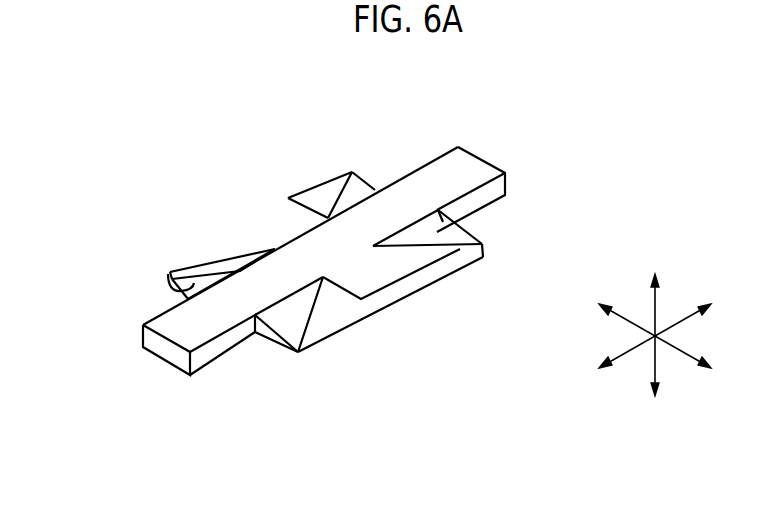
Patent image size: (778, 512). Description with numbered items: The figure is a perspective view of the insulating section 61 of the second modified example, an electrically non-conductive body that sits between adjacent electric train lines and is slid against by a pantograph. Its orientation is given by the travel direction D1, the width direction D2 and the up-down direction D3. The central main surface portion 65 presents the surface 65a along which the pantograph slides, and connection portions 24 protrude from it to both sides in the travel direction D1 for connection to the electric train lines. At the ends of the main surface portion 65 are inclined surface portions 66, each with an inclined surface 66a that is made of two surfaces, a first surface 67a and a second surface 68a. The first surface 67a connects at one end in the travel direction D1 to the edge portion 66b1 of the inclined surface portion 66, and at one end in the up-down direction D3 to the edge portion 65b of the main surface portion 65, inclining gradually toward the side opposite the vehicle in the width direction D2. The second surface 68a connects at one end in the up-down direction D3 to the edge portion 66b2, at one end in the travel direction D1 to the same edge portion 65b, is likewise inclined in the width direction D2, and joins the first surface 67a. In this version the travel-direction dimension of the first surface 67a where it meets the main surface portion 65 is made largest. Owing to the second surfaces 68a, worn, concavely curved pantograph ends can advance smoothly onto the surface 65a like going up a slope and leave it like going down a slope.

The insulating section 61 is at (593, 114).
The connection portions 24 is at (472, 162).
The main surface portion 65 is at (268, 212).
The surface of the main surface portion 65a is at (403, 296).
The edge portion of the main surface portion 65b is at (312, 192).
The inclined surface portion 66 is at (342, 276).
The inclined surface 66a is at (405, 93).
The edge portion on the travel direction side of the inclined surface portion 66b1 is at (372, 178).
The edge portion on one side in the up-down direction of the inclined surface portio 66b2 is at (298, 182).
The first surface 67a is at (358, 180).
The second surface 68a is at (335, 185).
The travel direction D1 is at (677, 325).
The width direction D2 is at (657, 308).
The up-down direction D3 is at (675, 352).